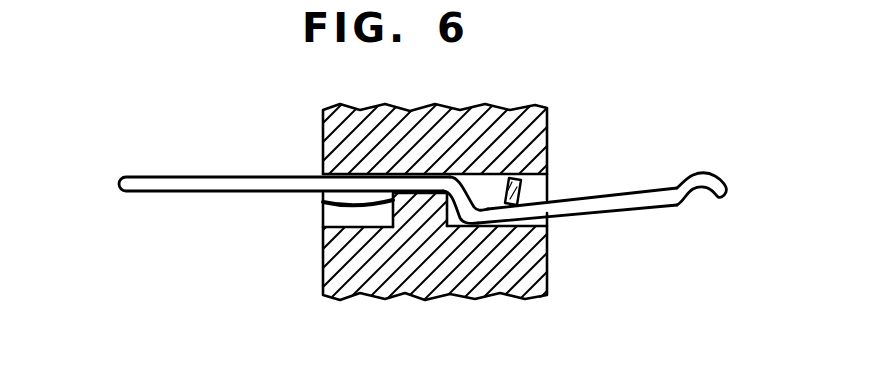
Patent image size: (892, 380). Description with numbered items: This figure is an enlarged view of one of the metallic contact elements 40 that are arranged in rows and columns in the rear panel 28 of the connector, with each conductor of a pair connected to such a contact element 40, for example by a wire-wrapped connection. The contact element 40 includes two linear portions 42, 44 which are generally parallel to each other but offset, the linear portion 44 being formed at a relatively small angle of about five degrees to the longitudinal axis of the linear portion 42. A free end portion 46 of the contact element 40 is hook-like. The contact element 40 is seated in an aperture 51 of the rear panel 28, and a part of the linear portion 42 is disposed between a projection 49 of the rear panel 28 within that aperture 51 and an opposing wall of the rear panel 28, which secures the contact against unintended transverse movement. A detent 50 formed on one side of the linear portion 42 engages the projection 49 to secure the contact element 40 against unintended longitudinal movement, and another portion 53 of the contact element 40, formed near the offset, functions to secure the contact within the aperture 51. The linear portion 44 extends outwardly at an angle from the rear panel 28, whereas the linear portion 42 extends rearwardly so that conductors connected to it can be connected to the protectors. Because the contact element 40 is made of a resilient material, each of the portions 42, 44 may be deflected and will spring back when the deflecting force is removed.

The rear panel 28 is at (334, 129).
The contact element 40 is at (422, 192).
The linear portion 42 is at (199, 177).
The linear portion 44 is at (643, 206).
The free end portion 46 is at (703, 176).
The projection 49 is at (418, 208).
The detent 50 is at (323, 202).
The aperture 51 is at (323, 228).
The portion 53 is at (540, 189).